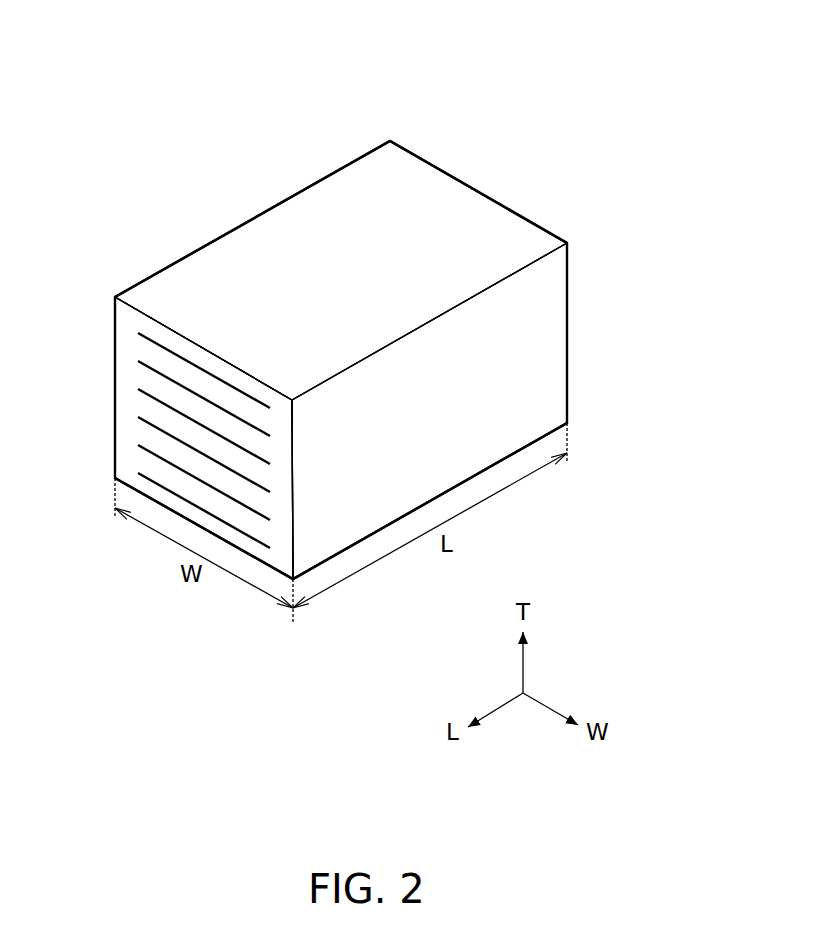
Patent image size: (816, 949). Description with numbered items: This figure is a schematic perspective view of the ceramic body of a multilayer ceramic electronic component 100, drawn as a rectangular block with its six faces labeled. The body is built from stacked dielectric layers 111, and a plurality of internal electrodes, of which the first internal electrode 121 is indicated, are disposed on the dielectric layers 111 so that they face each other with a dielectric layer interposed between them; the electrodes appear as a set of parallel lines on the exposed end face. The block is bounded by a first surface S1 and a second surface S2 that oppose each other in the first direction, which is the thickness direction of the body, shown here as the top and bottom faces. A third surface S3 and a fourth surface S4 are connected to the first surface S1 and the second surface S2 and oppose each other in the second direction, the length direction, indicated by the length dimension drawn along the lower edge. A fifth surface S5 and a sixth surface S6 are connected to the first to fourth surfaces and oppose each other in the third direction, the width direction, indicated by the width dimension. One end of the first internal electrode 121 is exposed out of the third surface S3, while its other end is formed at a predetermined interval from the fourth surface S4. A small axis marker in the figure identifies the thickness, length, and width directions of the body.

The multilayer ceramic electronic component 100 is at (142, 37).
The dielectric layers 111 is at (145, 378).
The first internal electrode 121 is at (138, 333).
The first surface S1 is at (343, 207).
The second surface S2 is at (349, 523).
The third surface S3 is at (200, 495).
The fourth surface S4 is at (460, 220).
The fifth surface S5 is at (540, 347).
The sixth surface S6 is at (190, 292).